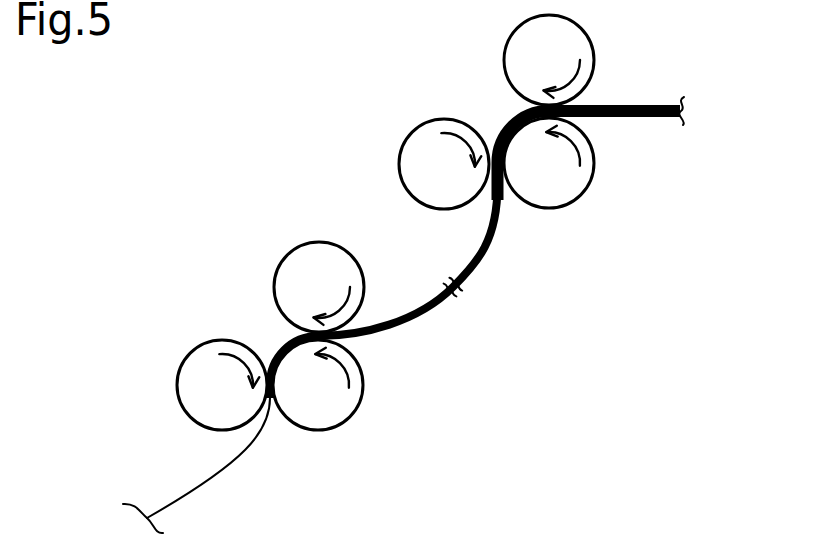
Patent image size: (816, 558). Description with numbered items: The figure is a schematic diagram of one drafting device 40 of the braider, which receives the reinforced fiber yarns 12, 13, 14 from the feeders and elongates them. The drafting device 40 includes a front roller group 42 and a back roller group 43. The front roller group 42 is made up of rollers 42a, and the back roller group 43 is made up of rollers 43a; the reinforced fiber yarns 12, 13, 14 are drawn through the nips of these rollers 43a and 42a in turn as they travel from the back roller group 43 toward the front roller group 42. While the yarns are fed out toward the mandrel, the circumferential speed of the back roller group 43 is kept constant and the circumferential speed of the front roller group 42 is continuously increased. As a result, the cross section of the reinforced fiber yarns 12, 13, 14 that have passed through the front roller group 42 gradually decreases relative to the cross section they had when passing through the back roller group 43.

The reinforced fiber yarn 12 is at (627, 148).
The reinforced fiber yarn 13 is at (591, 148).
The reinforced fiber yarn 14 is at (643, 118).
The drafting device 40 is at (487, 343).
The front roller group 42 is at (238, 285).
The roller 42a is at (313, 242).
The back roller group 43 is at (452, 67).
The roller 43a is at (581, 28).